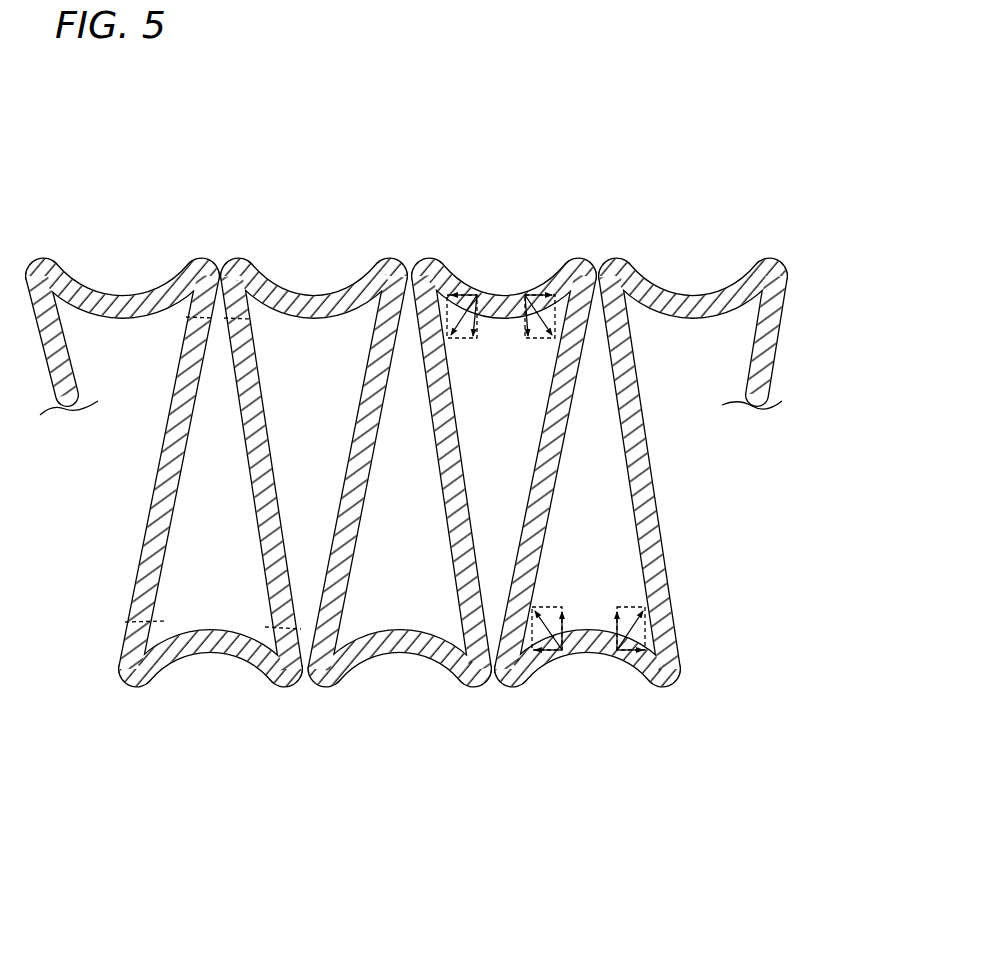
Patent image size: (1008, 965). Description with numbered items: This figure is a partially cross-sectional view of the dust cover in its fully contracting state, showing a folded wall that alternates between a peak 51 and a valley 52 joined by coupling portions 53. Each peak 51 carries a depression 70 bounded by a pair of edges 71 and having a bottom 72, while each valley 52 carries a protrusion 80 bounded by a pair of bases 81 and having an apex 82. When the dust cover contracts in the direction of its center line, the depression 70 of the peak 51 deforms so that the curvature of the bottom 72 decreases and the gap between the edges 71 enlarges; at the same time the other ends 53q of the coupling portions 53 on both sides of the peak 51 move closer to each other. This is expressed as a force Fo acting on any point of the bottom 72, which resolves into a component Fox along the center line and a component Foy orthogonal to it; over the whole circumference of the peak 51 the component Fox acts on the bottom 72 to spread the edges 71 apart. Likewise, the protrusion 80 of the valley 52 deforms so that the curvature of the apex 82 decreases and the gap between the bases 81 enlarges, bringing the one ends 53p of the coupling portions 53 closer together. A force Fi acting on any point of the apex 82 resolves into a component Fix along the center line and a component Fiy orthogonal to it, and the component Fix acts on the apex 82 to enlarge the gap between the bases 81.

The peak 51 is at (406, 218).
The valley 52 is at (399, 731).
The coupling portion 53 is at (148, 497).
The one end of coupling portion 53p is at (223, 323).
The other end of coupling portion 53q is at (262, 624).
The depression 70 is at (406, 254).
The edge 71 is at (240, 254).
The bottom 72 is at (313, 321).
The protrusion 80 is at (399, 693).
The base 81 is at (132, 690).
The apex 82 is at (400, 634).
The force Fo is at (529, 298).
The component Fox is at (537, 292).
The component Foy is at (515, 296).
The force Fi is at (627, 660).
The component Fix is at (639, 662).
The component Fiy is at (615, 655).